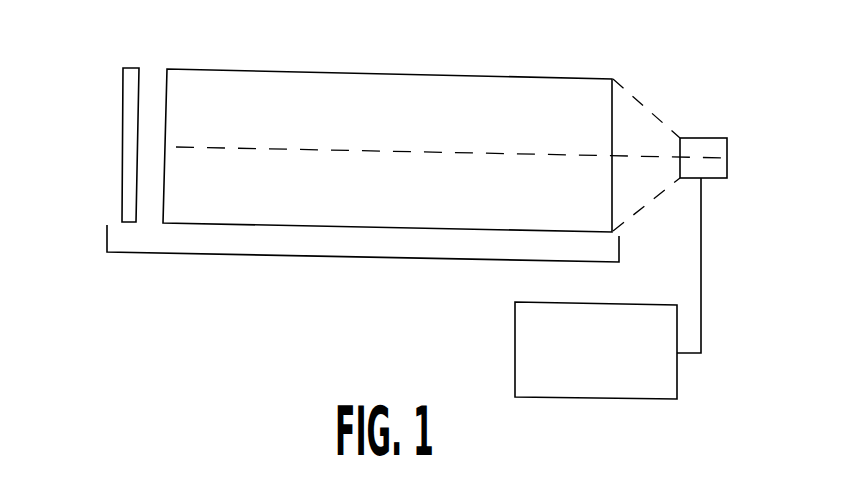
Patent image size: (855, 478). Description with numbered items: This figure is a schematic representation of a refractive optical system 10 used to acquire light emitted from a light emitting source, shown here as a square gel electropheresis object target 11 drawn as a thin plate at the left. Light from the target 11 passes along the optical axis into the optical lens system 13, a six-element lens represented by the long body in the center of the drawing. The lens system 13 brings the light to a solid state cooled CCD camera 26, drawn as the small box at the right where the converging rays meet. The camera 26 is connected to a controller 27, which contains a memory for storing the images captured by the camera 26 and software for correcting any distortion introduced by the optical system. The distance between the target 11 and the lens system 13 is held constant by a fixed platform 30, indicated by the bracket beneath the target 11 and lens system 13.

The refractive optical system 10 is at (297, 329).
The square gel electropheresis object target 11 is at (123, 157).
The optical lens system 13 is at (470, 73).
The cooled CCD camera 26 is at (727, 168).
The controller 27 is at (580, 399).
The fixed platform 30 is at (377, 268).